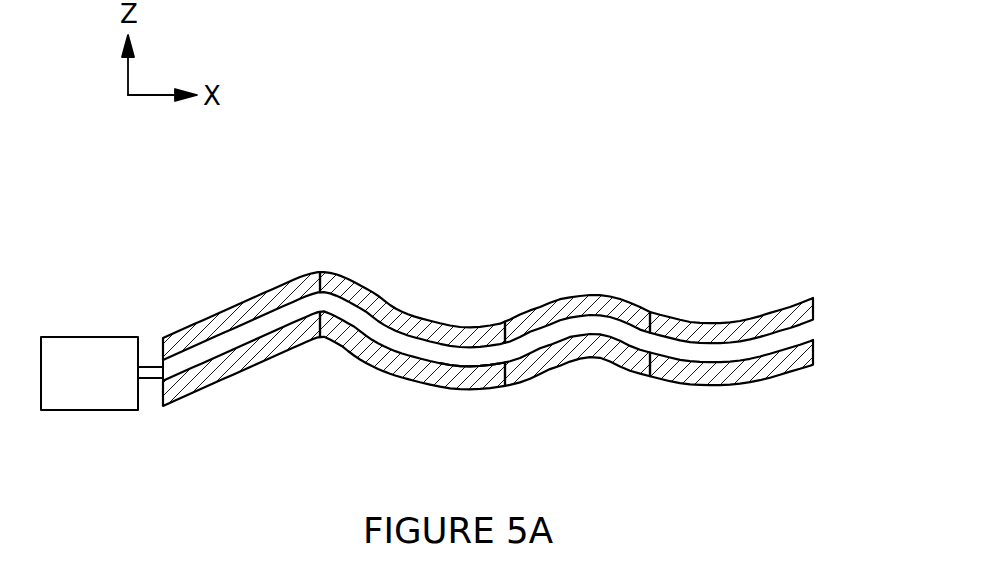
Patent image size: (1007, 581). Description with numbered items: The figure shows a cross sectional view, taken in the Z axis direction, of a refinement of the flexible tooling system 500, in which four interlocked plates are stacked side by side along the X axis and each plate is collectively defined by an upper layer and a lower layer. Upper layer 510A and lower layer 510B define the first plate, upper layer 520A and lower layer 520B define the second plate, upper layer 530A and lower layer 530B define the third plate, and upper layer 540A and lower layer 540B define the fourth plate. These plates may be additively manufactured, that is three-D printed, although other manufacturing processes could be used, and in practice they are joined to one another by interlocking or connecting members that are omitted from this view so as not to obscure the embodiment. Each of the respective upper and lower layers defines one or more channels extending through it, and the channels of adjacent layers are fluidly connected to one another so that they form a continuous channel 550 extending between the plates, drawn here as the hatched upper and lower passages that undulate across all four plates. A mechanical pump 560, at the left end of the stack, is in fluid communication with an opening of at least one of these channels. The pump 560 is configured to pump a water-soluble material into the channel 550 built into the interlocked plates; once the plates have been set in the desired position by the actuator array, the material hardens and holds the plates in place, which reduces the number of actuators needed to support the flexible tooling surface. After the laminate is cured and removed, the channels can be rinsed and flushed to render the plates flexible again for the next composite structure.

The flexible tooling system 500 is at (604, 141).
The upper layer 510A is at (260, 298).
The lower layer 510B is at (247, 358).
The upper layer 520A is at (415, 327).
The lower layer 520B is at (403, 368).
The upper layer 530A is at (603, 305).
The lower layer 530B is at (587, 348).
The upper layer 540A is at (753, 328).
The lower layer 540B is at (752, 370).
The channel 550 is at (462, 362).
The mechanical pump 560 is at (89, 336).